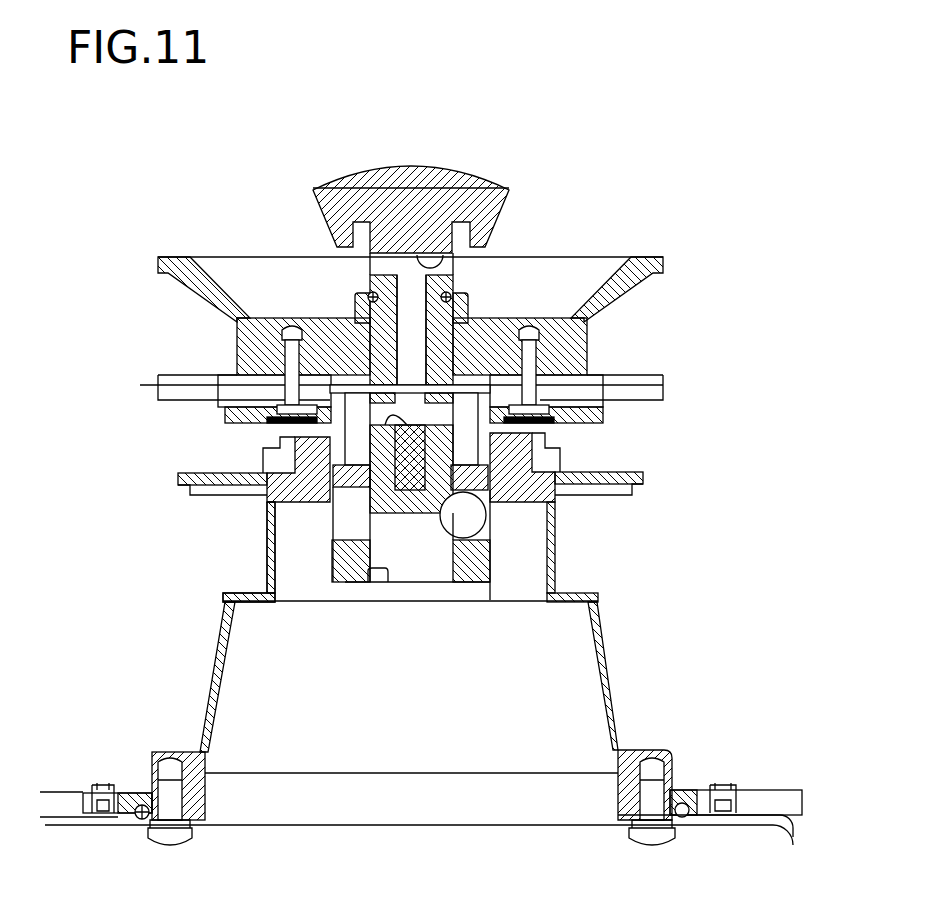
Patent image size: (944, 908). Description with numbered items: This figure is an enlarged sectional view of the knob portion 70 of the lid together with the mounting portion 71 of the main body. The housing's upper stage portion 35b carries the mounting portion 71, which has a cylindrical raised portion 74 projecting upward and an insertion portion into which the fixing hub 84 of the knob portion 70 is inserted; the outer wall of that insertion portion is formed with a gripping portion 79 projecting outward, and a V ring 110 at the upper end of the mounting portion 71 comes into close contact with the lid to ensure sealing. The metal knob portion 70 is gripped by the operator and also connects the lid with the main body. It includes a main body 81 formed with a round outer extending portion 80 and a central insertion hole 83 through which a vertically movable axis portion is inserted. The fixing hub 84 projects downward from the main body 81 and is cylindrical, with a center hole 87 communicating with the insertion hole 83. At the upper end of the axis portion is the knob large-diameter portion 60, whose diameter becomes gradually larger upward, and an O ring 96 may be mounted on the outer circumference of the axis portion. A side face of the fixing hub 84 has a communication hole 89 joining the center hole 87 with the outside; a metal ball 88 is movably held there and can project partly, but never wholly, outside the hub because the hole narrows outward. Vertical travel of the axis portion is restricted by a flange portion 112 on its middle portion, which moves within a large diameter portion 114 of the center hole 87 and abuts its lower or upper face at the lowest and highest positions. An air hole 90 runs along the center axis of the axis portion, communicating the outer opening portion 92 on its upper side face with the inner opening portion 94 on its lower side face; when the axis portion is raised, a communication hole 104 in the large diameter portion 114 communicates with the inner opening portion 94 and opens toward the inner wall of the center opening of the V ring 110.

The knob large-diameter portion 60 is at (386, 192).
The outer opening portion 92 is at (437, 250).
The knob portion 70 is at (613, 205).
The outer extending portion 80 is at (175, 258).
The insertion hole 83 is at (250, 338).
The air hole 90 is at (370, 315).
The O ring 96 is at (446, 293).
The main body 81 is at (237, 357).
The flange portion 112 is at (633, 345).
The large diameter portion 114 is at (267, 410).
The communication hole 104 is at (540, 383).
The V ring 110 is at (547, 460).
The gripping portion 79 is at (645, 483).
The communication hole 89 is at (337, 532).
The mounting portion 71 is at (645, 548).
The inner opening portion 94 is at (403, 490).
The cylindrical raised portion 74 is at (270, 558).
The fixing hub 84 is at (337, 568).
The center hole 87 is at (388, 577).
The metal ball 88 is at (465, 518).
The upper stage portion 35b is at (225, 668).